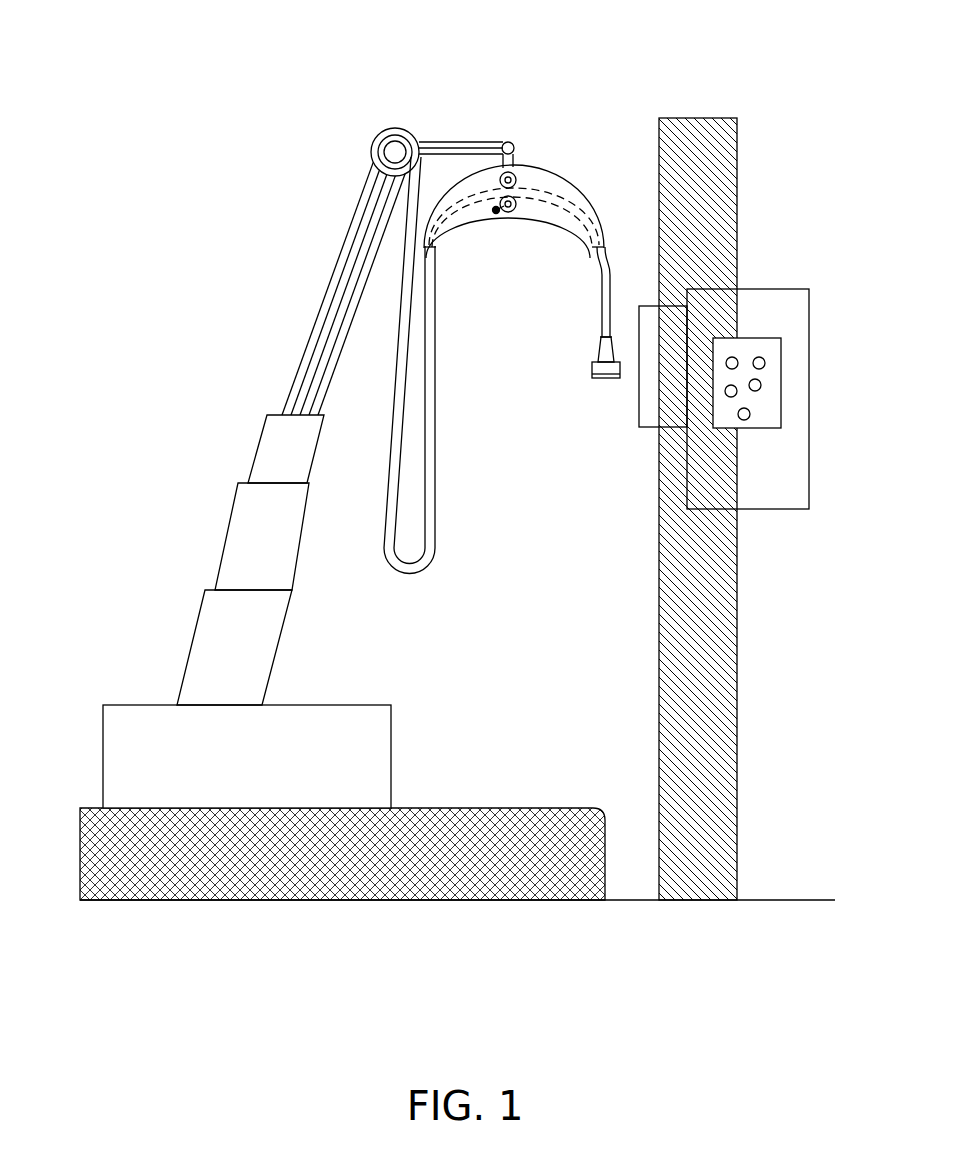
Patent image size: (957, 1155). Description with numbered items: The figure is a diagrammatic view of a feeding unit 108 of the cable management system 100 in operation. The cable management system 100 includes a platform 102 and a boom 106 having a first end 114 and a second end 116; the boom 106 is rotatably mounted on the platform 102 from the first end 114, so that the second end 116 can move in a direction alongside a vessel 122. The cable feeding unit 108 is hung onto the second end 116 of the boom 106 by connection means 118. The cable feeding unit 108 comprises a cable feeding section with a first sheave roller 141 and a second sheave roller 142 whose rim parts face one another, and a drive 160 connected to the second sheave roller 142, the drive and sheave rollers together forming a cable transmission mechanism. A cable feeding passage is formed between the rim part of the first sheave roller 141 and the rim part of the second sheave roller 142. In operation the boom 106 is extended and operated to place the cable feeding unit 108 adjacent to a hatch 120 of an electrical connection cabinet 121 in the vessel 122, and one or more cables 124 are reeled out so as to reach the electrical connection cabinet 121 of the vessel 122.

The cable management system 100 is at (108, 152).
The platform 102 is at (222, 712).
The boom 106 is at (342, 284).
The cable feeding unit 108 is at (533, 228).
The first end 114 is at (301, 560).
The second end 116 is at (396, 95).
The connection means 118 is at (513, 102).
The hatch 120 is at (765, 367).
The electrical connection cabinet 121 is at (789, 425).
The vessel 122 is at (763, 509).
The cables 124 is at (711, 293).
The first sheave roller 141 is at (546, 133).
The second sheave roller 142 is at (533, 256).
The drive 160 is at (475, 264).